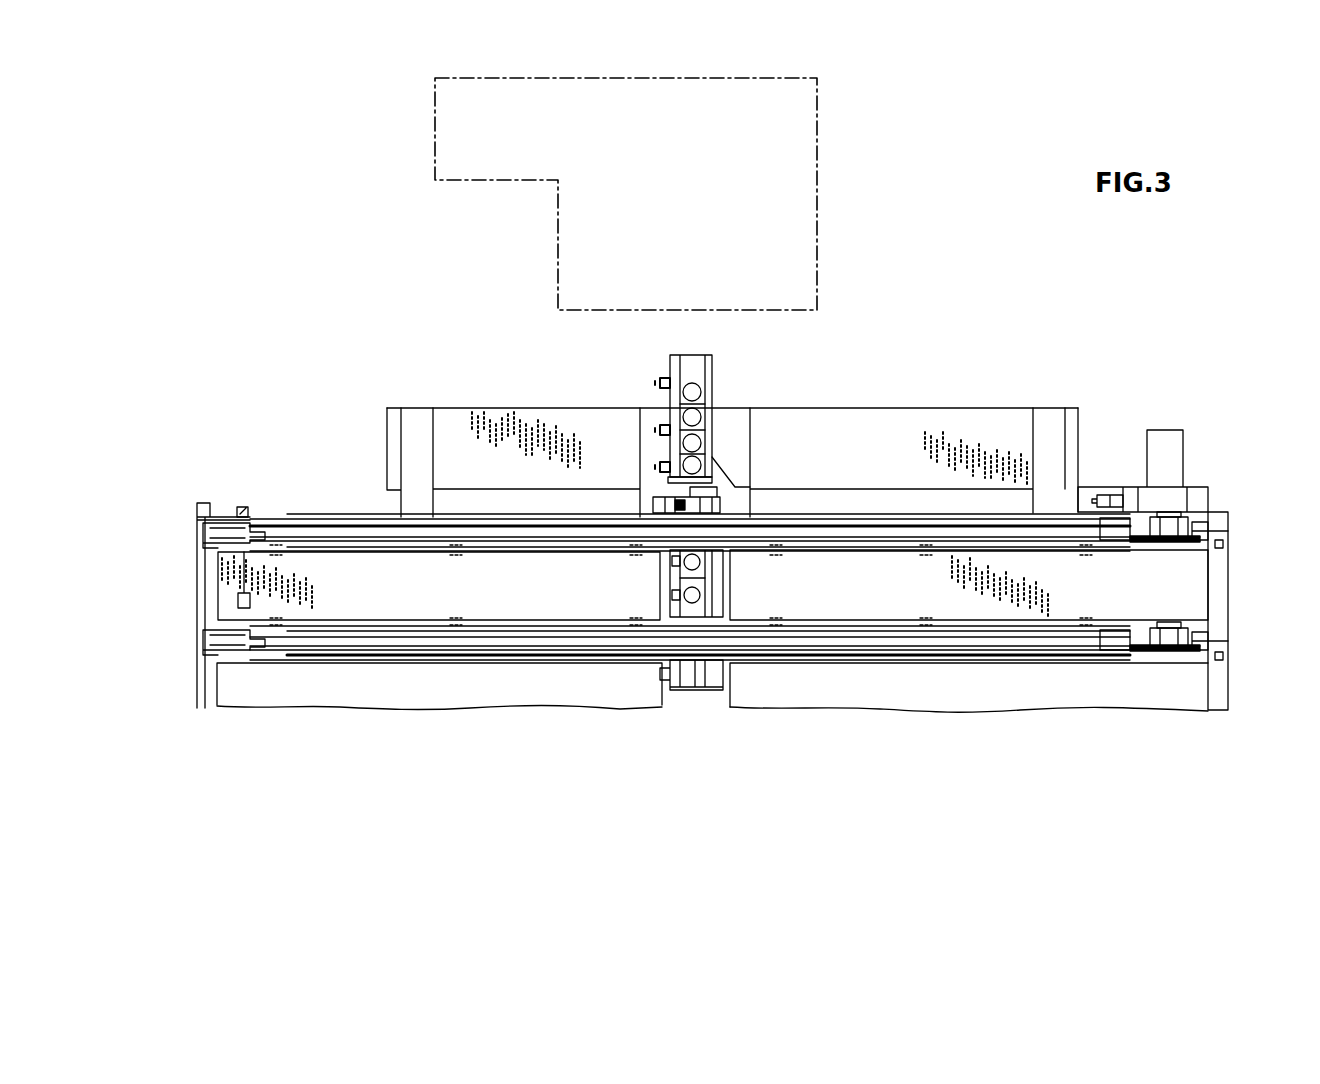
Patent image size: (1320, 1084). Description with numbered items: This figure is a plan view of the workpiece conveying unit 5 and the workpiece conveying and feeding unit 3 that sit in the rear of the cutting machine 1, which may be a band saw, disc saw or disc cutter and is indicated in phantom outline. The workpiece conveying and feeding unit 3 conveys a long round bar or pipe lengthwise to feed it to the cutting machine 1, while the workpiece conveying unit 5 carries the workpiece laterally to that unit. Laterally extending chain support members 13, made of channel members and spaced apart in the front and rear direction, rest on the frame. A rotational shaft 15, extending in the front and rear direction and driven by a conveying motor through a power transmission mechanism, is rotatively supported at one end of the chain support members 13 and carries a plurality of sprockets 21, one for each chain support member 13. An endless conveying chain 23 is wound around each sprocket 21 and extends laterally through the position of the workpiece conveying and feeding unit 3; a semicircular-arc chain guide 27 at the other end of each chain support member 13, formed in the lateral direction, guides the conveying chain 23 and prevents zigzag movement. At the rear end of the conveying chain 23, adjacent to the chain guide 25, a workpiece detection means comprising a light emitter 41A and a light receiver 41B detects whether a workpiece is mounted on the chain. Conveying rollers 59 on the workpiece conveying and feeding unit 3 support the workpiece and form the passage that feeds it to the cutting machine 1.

The cutting machine 1 is at (817, 243).
The workpiece conveying and feeding unit 3 is at (720, 388).
The workpiece conveying unit 5 is at (858, 670).
The chain support member 13 is at (1118, 650).
The rotational shaft 15 is at (1172, 630).
The sprocket 21 is at (1158, 532).
The conveying chain 23 is at (1208, 528).
The chain guide 25 is at (222, 517).
The chain guide 27 is at (588, 532).
The light emitter 41A is at (250, 598).
The light receiver 41B is at (245, 512).
The conveying roller 59 is at (695, 556).